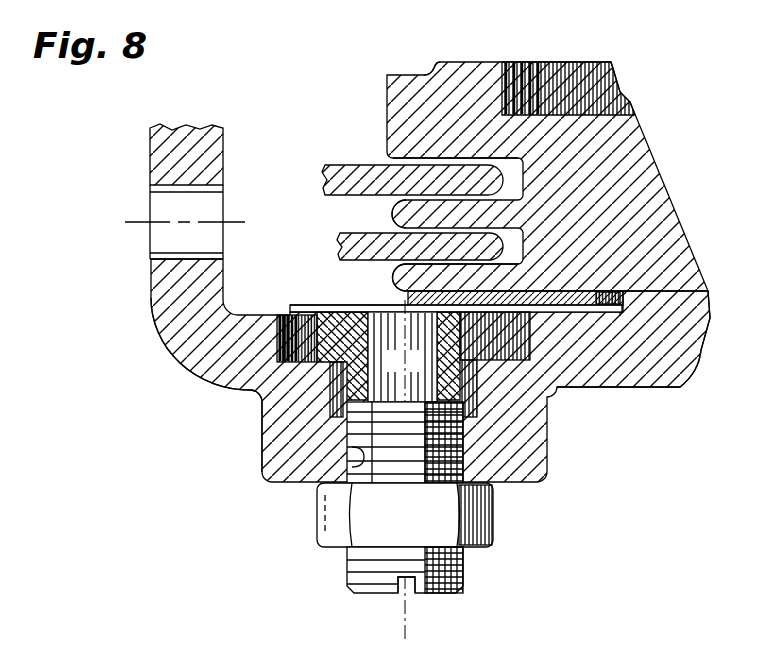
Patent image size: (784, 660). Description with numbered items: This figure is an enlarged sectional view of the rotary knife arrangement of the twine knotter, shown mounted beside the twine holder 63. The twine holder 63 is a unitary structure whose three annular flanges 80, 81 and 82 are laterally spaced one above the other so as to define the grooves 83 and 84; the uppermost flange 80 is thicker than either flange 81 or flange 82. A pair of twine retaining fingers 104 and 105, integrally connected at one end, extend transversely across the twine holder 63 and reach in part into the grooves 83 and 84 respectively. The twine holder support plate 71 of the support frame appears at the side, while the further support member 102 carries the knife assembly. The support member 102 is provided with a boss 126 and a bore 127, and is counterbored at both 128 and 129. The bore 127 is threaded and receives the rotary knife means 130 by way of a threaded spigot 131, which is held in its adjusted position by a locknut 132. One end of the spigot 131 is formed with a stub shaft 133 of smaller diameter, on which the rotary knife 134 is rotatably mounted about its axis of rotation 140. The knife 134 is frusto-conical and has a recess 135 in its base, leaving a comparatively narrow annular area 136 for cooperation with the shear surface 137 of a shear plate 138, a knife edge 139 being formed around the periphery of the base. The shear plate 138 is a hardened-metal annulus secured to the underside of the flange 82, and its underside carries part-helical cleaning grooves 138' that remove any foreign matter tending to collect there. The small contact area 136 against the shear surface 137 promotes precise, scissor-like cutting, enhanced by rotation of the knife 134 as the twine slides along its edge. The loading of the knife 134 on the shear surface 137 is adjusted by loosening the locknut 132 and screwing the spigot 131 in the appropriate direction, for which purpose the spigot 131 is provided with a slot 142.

The twine holder 63 is at (424, 66).
The twine holder support plate 71 is at (623, 388).
The flange 80 is at (387, 97).
The flange 81 is at (392, 213).
The flange 82 is at (393, 279).
The slot or groove 83 is at (380, 150).
The slot or groove 84 is at (384, 264).
The support member 102 is at (150, 152).
The twine retaining finger 104 is at (325, 179).
The twine retaining finger 105 is at (340, 246).
The boss 126 is at (548, 450).
The bore 127 is at (352, 457).
The counterbore 128 is at (263, 430).
The counterbore 129 is at (260, 397).
The rotary knife means 130 is at (278, 352).
The threaded spigot 131 is at (464, 565).
The locknut 132 is at (494, 511).
The stub shaft 133 is at (407, 470).
The rotary knife 134 is at (277, 337).
The recess 135 is at (318, 304).
The annular area 136 is at (312, 311).
The shear surface 137 is at (470, 345).
The shear plate 138 is at (577, 266).
The cleaning grooves 138' is at (576, 244).
The knife edge 139 is at (300, 317).
The axis of rotation 140 is at (405, 597).
The slot 142 is at (398, 595).